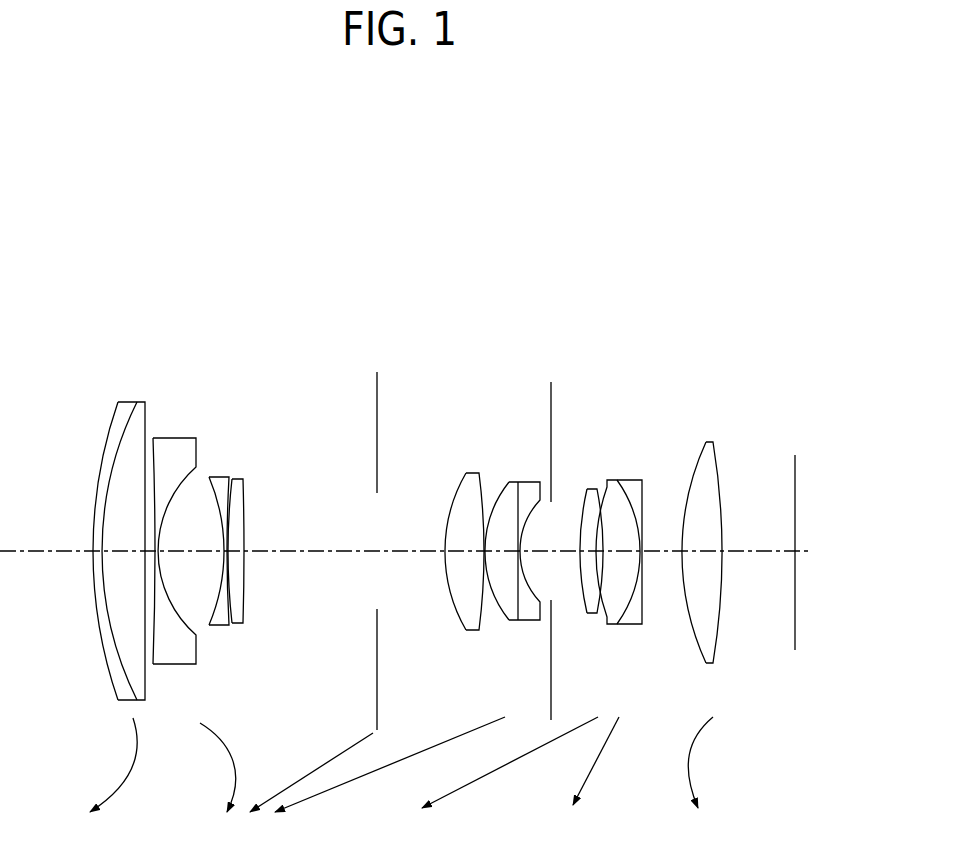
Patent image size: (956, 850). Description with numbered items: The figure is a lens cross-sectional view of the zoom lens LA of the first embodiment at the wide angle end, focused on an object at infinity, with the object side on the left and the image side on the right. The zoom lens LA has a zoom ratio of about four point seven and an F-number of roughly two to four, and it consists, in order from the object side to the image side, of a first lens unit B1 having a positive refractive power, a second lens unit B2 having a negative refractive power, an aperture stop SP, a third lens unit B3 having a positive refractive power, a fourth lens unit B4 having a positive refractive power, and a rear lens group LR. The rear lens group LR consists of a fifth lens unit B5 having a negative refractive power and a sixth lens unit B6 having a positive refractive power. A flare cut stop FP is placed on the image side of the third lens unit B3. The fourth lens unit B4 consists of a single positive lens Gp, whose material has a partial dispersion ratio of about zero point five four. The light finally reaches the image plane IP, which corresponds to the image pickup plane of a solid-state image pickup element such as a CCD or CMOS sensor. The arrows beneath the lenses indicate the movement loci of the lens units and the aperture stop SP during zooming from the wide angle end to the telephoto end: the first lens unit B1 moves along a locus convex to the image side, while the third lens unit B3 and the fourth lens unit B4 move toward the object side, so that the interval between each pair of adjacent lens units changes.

The zoom lens LA is at (722, 307).
The first lens unit B1 is at (144, 377).
The second lens unit B2 is at (244, 377).
The third lens unit B3 is at (560, 377).
The fourth lens unit B4 is at (599, 377).
The fifth lens unit B5 is at (633, 377).
The sixth lens unit B6 is at (722, 377).
The rear lens group LR is at (722, 336).
The aperture stop SP is at (377, 426).
The flare cut stop FP is at (551, 433).
The positive lens Gp is at (586, 489).
The image plane IP is at (795, 471).